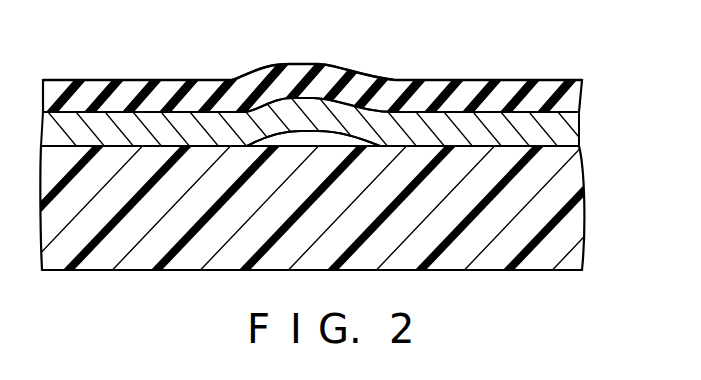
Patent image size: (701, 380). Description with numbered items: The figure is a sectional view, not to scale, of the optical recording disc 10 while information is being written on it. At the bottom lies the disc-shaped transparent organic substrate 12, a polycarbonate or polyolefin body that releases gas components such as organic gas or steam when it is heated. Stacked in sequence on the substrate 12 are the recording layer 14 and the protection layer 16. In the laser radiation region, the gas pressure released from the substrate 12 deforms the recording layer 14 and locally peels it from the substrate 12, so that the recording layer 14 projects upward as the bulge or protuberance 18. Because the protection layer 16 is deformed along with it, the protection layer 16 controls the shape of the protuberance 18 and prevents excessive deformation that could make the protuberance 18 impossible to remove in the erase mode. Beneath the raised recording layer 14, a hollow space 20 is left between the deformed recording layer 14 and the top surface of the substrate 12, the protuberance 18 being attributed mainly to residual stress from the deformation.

The optical recording disc 10 is at (340, 155).
The transparent organic substrate 12 is at (571, 232).
The recording layer 14 is at (572, 136).
The protection layer 16 is at (574, 90).
The protuberance 18 is at (387, 73).
The hollow space 20 is at (333, 141).